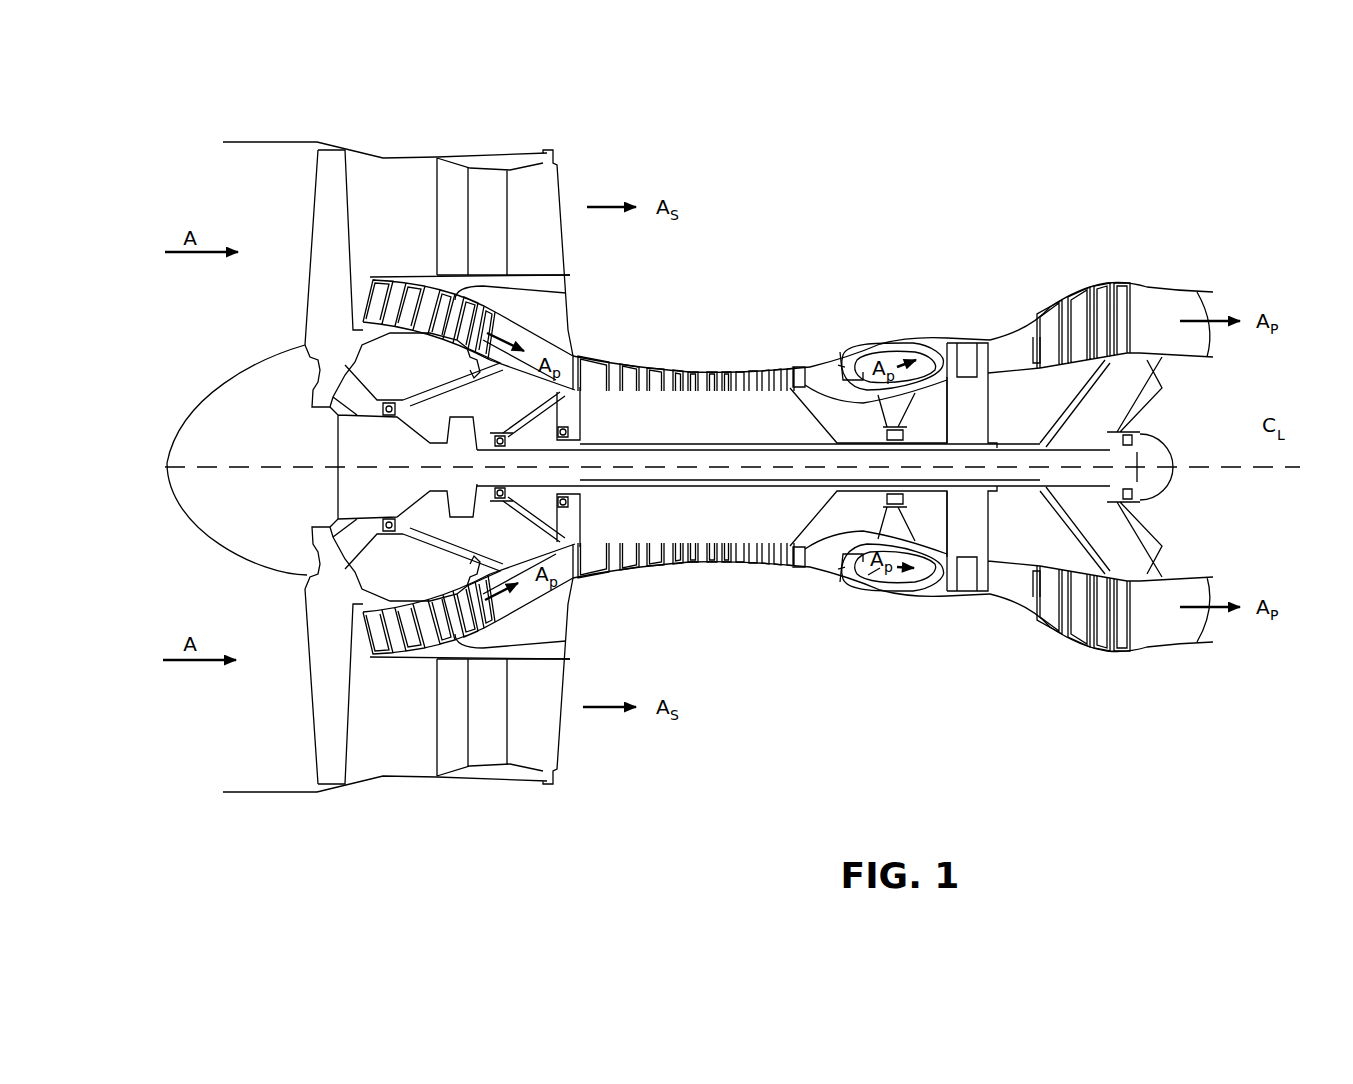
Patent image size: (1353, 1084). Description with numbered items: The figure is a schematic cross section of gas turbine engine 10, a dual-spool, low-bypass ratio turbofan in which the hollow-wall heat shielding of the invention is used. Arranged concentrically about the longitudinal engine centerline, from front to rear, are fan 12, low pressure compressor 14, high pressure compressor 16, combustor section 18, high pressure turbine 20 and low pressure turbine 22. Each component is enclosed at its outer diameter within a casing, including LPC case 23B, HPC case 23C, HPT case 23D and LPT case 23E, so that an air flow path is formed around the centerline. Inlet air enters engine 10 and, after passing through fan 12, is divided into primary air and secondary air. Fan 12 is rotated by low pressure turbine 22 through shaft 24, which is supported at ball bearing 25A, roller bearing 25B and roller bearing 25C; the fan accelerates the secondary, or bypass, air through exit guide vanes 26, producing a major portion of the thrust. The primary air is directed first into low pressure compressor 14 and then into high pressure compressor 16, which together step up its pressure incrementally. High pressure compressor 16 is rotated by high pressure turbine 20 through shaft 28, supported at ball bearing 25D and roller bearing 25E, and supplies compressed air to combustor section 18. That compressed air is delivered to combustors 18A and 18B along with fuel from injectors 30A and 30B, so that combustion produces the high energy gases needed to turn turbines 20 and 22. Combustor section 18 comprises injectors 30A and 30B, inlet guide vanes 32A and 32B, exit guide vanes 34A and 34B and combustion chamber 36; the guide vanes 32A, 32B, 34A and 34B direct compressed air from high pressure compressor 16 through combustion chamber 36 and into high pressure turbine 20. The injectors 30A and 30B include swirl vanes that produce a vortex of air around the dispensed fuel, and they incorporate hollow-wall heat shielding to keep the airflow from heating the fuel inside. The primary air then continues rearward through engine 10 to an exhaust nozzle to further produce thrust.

The gas turbine engine 10 is at (1013, 207).
The fan 12 is at (327, 222).
The low pressure compressor 14 is at (425, 657).
The high pressure compressor 16 is at (722, 585).
The combustor section 18 is at (907, 493).
The combustor 18A is at (882, 575).
The combustor 18B is at (940, 320).
The high pressure turbine 20 is at (940, 593).
The low pressure turbine 22 is at (1070, 652).
The LPC case 23B is at (563, 293).
The HPC case 23C is at (707, 368).
The HPT case 23D is at (955, 610).
The LPT case 23E is at (1125, 280).
The shaft 24 is at (760, 460).
The ball bearing 25A is at (357, 373).
The roller bearing 25B is at (548, 545).
The roller bearing 25C is at (1120, 507).
The ball bearing 25D is at (556, 430).
The roller bearing 25E is at (890, 425).
The exit guide vanes 26 is at (493, 252).
The shaft 28 is at (837, 557).
The injector 30A is at (838, 365).
The injector 30B is at (843, 578).
The inlet guide vane 32A is at (816, 367).
The inlet guide vane 32B is at (797, 560).
The exit guide vane 34A is at (955, 340).
The exit guide vane 34B is at (918, 573).
The combustion chamber 36 is at (880, 573).